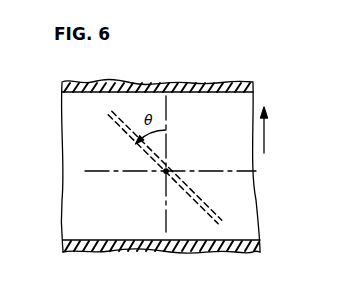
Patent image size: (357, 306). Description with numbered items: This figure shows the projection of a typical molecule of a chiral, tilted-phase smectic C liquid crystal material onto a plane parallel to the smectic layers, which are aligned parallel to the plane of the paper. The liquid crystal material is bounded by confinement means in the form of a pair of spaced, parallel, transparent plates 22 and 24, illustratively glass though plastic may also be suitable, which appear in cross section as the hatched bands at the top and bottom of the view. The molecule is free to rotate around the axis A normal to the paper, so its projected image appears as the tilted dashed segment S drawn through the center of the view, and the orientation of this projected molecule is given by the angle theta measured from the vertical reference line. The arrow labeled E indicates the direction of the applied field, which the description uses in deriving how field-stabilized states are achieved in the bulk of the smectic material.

The transparent plate 22 is at (217, 253).
The transparent plate 24 is at (202, 81).
The string segment S is at (213, 205).
The axis A is at (163, 174).
The electric field direction E is at (271, 130).